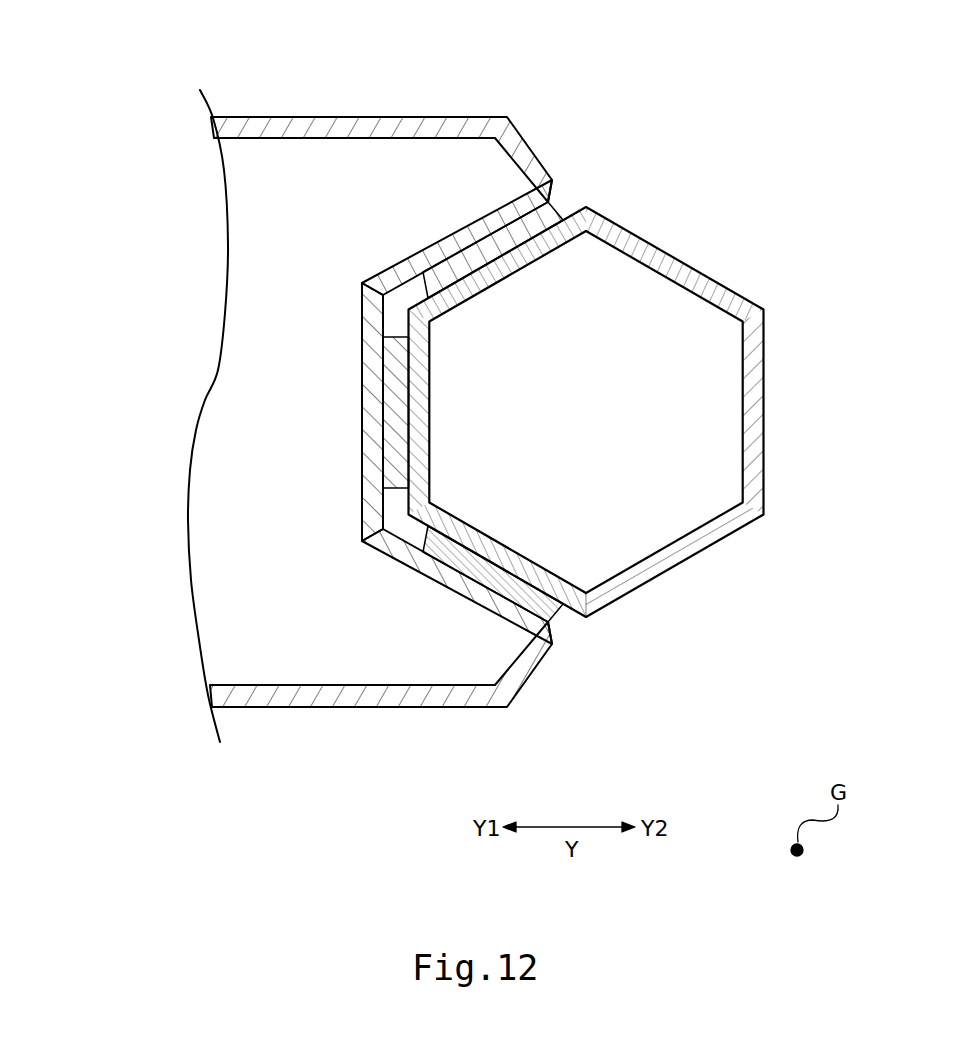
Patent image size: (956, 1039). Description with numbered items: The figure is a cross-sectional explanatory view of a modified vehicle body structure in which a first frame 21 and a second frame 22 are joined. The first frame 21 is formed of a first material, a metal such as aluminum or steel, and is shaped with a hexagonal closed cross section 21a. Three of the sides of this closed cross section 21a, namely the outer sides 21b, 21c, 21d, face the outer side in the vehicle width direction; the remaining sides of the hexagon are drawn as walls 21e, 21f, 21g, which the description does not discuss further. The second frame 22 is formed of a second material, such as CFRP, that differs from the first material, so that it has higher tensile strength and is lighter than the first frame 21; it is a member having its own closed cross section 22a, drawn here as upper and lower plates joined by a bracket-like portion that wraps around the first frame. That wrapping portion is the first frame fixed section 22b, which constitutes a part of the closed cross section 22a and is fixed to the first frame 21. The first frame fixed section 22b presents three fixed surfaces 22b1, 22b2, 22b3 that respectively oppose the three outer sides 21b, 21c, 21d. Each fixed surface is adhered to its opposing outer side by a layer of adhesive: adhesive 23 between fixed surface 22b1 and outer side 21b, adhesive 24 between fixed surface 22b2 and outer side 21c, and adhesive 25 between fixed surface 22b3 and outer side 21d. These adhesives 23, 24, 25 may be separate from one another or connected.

The first frame 21 is at (621, 403).
The hexagonal closed cross section 21a is at (613, 602).
The outer side 21b is at (533, 268).
The outer side 21c is at (432, 402).
The outer side 21d is at (560, 584).
The upper-right wall 21e is at (708, 272).
The right wall 21f is at (766, 420).
The lower-right wall 21g is at (680, 565).
The second frame 22 is at (470, 99).
The closed cross section 22a is at (372, 688).
The first frame fixed section 22b is at (301, 412).
The fixed surface 22b1 is at (428, 262).
The fixed surface 22b2 is at (368, 400).
The fixed surface 22b3 is at (418, 576).
The adhesive 23 is at (470, 256).
The adhesive 24 is at (400, 432).
The adhesive 25 is at (470, 548).